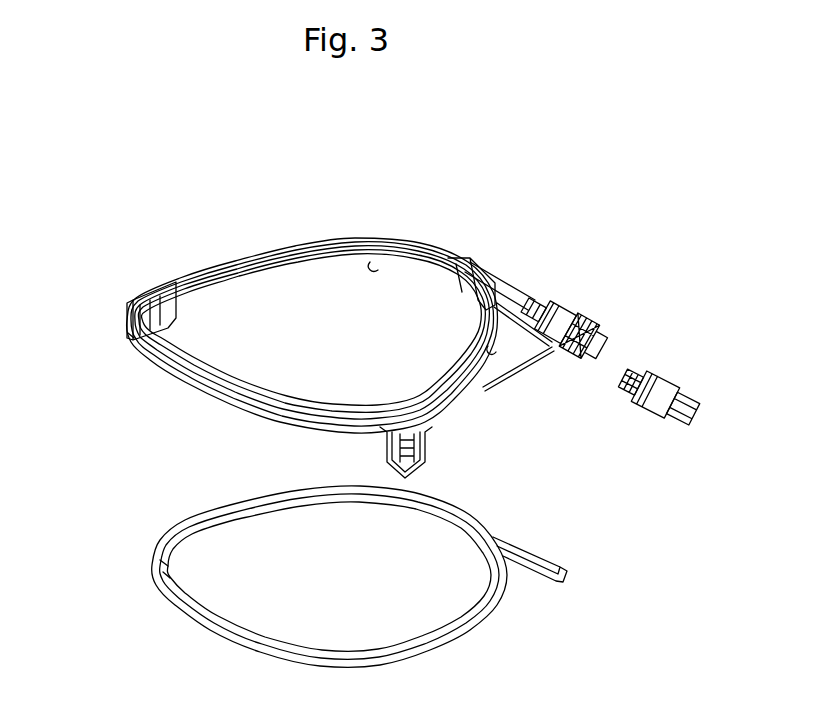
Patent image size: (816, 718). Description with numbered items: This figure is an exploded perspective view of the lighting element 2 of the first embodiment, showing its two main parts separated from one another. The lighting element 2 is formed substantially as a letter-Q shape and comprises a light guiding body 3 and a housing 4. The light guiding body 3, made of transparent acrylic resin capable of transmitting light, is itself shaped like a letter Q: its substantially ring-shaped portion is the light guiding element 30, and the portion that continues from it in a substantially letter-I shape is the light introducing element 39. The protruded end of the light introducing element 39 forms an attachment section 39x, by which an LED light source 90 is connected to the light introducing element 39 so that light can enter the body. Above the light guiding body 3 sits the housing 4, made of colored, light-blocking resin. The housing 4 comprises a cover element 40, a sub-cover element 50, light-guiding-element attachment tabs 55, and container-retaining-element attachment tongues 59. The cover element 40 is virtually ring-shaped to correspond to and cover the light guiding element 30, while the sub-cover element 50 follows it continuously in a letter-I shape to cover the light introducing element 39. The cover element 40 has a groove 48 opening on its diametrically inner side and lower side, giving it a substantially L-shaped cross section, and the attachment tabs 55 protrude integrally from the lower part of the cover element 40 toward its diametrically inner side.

The lighting element 2 is at (92, 412).
The light guiding body 3 is at (183, 545).
The housing 4 is at (197, 387).
The light guiding element 30 is at (272, 635).
The light introducing element 39 is at (518, 550).
The attachment section 39x is at (598, 330).
The cover element 40 is at (288, 242).
The groove 48 is at (412, 270).
The sub-cover element 50 is at (533, 300).
The light-guiding-element attachment tab 55 is at (372, 268).
The container-retaining-element attachment tongue 59 is at (178, 315).
The LED light source 90 is at (690, 380).